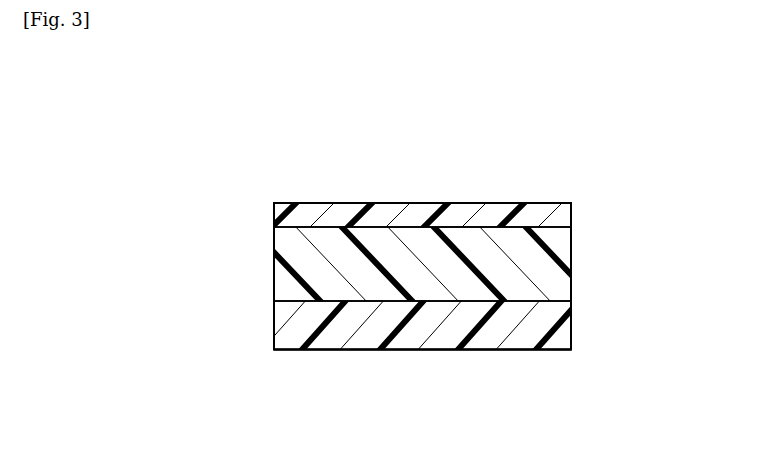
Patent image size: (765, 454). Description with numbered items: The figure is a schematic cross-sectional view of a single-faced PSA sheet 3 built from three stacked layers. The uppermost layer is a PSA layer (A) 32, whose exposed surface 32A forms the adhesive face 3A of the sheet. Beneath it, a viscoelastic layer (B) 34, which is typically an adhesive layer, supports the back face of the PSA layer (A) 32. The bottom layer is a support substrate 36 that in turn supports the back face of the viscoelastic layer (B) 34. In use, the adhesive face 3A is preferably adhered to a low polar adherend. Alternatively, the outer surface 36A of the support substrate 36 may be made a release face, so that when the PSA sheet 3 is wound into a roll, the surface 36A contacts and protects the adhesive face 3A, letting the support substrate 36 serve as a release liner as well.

The PSA sheet 3 is at (453, 265).
The adhesive face 3A is at (450, 167).
The surface of PSA layer (A) 32A is at (515, 202).
The PSA layer (A) 32 is at (566, 217).
The viscoelastic layer (B) 34 is at (567, 280).
The support substrate 36 is at (572, 320).
The surface of support substrate 36A is at (497, 350).